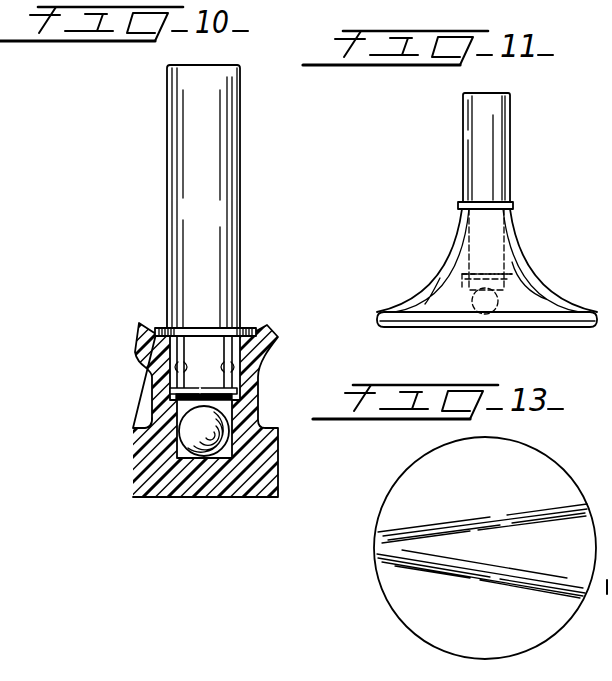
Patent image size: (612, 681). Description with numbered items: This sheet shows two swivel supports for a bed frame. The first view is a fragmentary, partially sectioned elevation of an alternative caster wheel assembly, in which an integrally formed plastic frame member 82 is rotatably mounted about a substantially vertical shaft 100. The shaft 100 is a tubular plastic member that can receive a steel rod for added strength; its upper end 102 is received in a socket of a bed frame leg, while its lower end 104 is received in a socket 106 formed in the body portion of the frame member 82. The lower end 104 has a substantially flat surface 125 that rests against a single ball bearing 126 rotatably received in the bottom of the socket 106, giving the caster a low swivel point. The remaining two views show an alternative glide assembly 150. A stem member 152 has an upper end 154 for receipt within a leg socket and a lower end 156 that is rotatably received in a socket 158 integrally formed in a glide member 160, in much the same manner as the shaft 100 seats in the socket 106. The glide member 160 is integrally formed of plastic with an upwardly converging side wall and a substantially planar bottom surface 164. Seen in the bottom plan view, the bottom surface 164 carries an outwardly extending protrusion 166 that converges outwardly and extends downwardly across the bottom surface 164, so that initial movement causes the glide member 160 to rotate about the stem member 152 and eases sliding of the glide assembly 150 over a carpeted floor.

In FIG. 10, the frame member 82 is at (247, 428).
In FIG. 10, the shaft 100 is at (222, 213).
In FIG. 10, the upper end 102 is at (223, 114).
In FIG. 10, the lower end 104 is at (215, 374).
In FIG. 10, the socket 106 is at (170, 376).
In FIG. 10, the flat surface 125 is at (141, 428).
In FIG. 10, the ball bearing 126 is at (210, 447).
In FIG. 11, the glide assembly 150 is at (488, 287).
In FIG. 11, the stem member 152 is at (493, 157).
In FIG. 11, the upper end 154 is at (497, 103).
In FIG. 11, the lower end 156 is at (456, 282).
In FIG. 11, the socket 158 is at (458, 233).
In FIG. 11, the glide member 160 is at (543, 276).
In FIG. 13, the glide member 160 is at (383, 597).
In FIG. 11, the bottom surface 164 is at (568, 317).
In FIG. 13, the bottom surface 164 is at (527, 465).
In FIG. 11, the protrusion 166 is at (550, 323).
In FIG. 13, the protrusion 166 is at (542, 523).